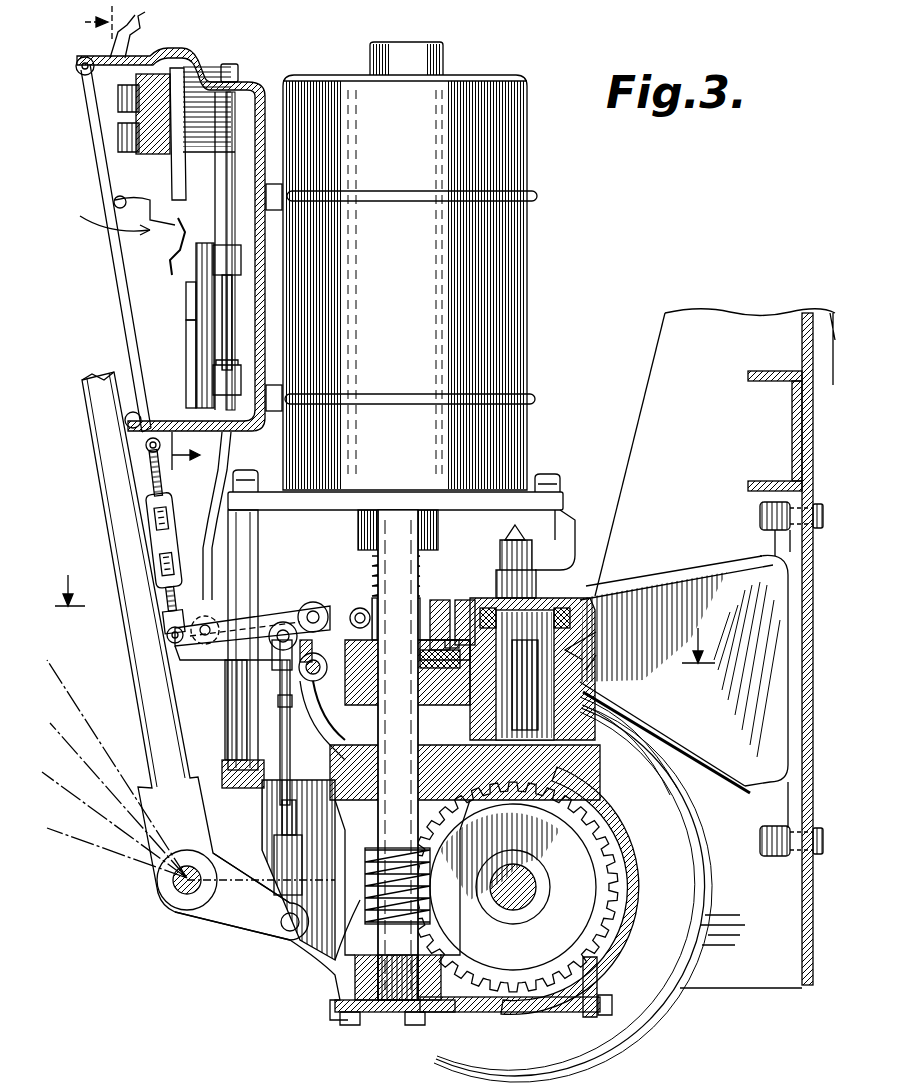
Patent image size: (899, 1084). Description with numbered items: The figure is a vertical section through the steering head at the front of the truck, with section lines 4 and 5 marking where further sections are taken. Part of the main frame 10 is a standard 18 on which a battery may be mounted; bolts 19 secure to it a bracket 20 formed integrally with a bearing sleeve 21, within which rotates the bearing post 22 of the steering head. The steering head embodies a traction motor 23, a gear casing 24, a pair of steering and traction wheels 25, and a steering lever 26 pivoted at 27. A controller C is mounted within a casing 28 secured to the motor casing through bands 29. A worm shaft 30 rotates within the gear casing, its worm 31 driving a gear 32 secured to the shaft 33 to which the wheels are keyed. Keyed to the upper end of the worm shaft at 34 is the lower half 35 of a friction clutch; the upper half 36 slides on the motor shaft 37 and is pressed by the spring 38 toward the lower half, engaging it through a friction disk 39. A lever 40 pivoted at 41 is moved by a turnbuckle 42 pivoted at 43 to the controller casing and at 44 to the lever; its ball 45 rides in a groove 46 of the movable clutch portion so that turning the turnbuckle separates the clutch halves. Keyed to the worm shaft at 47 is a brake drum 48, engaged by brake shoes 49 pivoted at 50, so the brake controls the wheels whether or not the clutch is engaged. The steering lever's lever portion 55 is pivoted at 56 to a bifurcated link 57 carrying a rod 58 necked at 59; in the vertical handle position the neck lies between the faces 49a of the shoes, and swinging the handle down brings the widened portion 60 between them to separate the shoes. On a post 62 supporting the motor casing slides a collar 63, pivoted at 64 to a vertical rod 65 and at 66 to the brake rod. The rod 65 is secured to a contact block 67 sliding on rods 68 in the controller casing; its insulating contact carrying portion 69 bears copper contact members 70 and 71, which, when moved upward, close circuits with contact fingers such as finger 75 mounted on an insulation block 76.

The main frame 10 is at (762, 985).
The standard 18 is at (792, 452).
The bolts 19 is at (760, 514).
The bracket 20 is at (693, 580).
The bearing sleeve 21 is at (583, 645).
The bearing post 22 is at (586, 668).
The traction motor 23 is at (412, 330).
The gear casing 24 is at (620, 745).
The steering and traction wheels 25 is at (650, 1032).
The steering lever 26 is at (130, 672).
The pivot 27 is at (172, 885).
The controller casing 28 is at (196, 62).
The bands 29 is at (395, 192).
The worm shaft 30 is at (375, 935).
The worm 31 is at (261, 870).
The gear 32 is at (487, 985).
The shaft 33 is at (500, 897).
The keyed upper end 34 is at (470, 666).
The lower half of friction clutch 35 is at (468, 600).
The upper half of clutch 36 is at (372, 605).
The motor shaft 37 is at (432, 548).
The spring 38 is at (378, 568).
The friction disk 39 is at (445, 600).
The lever 40 is at (272, 612).
The pivot 41 is at (308, 600).
The turnbuckle 42 is at (150, 528).
The pivot 43 is at (146, 447).
The pivot 44 is at (167, 636).
The ball 45 is at (352, 610).
The groove 46 is at (452, 630).
The keyed location 47 is at (482, 690).
The brake drum 48 is at (318, 722).
The brake shoes 49 is at (282, 712).
The faces of brake shoes 49a is at (295, 690).
The pivot 50 is at (450, 640).
The lever portion 55 is at (230, 925).
The pivot 56 is at (260, 940).
The bifurcated link 57 is at (296, 855).
The rod 58 is at (292, 820).
The neck portion 59 is at (272, 660).
The widened portion 60 is at (280, 742).
The post 62 is at (258, 534).
The collar 63 is at (215, 665).
The pivot 64 is at (205, 640).
The vertical rod 65 is at (210, 505).
The pivot 66 is at (284, 622).
The contact block 67 is at (241, 271).
The rods 68 is at (250, 90).
The contact carrying portion 69 is at (200, 293).
The contact member 70 is at (190, 348).
The contact member 71 is at (192, 318).
The contact finger 75 is at (168, 238).
The insulation block 76 is at (150, 58).
The section line 4— 4 is at (385, 632).
The section line 5— 5 is at (134, 244).
The controller C is at (102, 218).